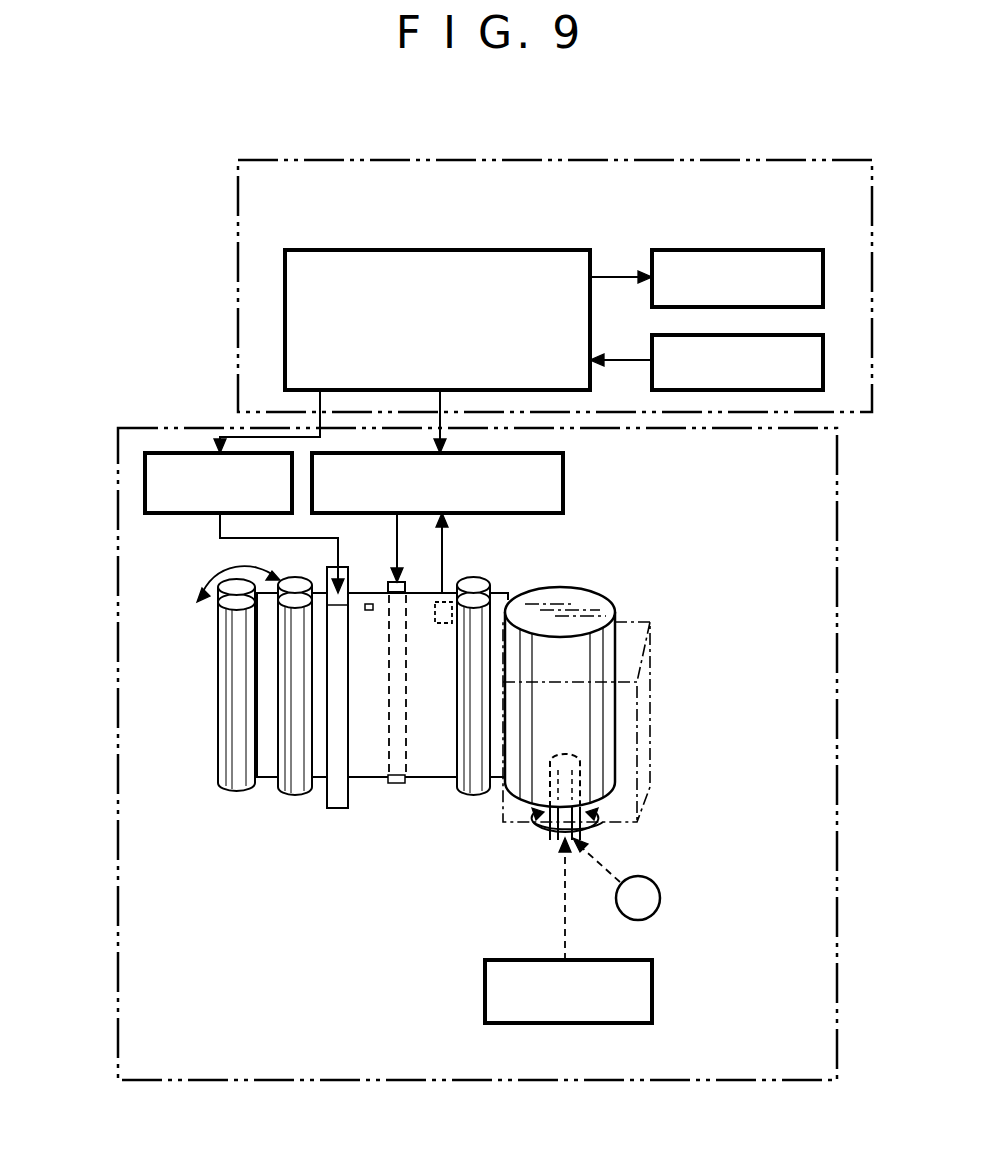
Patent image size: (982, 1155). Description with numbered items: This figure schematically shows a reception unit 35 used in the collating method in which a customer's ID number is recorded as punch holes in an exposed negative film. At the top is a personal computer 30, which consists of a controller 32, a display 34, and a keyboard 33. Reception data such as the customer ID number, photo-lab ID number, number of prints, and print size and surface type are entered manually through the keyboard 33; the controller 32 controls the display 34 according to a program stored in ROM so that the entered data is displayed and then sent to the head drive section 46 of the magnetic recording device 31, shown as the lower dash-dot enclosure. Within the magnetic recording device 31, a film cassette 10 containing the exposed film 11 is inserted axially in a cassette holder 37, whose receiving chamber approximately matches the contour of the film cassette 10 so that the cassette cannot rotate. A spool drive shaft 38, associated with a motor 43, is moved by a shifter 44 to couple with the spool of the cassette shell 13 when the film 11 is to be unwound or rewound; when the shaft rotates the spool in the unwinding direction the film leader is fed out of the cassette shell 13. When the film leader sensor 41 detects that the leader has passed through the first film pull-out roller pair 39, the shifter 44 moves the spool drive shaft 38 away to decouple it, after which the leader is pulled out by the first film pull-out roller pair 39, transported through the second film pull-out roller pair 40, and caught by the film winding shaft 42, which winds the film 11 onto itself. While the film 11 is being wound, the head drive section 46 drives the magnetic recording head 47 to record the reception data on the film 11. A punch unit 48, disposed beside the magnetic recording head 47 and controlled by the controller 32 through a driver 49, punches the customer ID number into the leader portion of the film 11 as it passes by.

The film cassette 10 is at (592, 584).
The film 11 is at (375, 765).
The cassette shell 13 is at (596, 612).
The personal computer 30 is at (238, 286).
The magnetic recording device 31 is at (118, 818).
The controller 32 is at (508, 250).
The keyboard 33 is at (823, 360).
The display 34 is at (765, 250).
The reception unit 35 is at (452, 942).
The cassette holder 37 is at (663, 704).
The spool drive shaft 38 is at (550, 835).
The first film pull-out roller pair 39 is at (478, 790).
The second film pull-out roller pair 40 is at (302, 790).
The film leader sensor 41 is at (448, 602).
The film winding shaft 42 is at (245, 790).
The motor 43 is at (660, 893).
The shifter 44 is at (652, 990).
The head drive section 46 is at (563, 485).
The magnetic recording head 47 is at (398, 582).
The punch unit 48 is at (340, 810).
The driver 49 is at (192, 513).